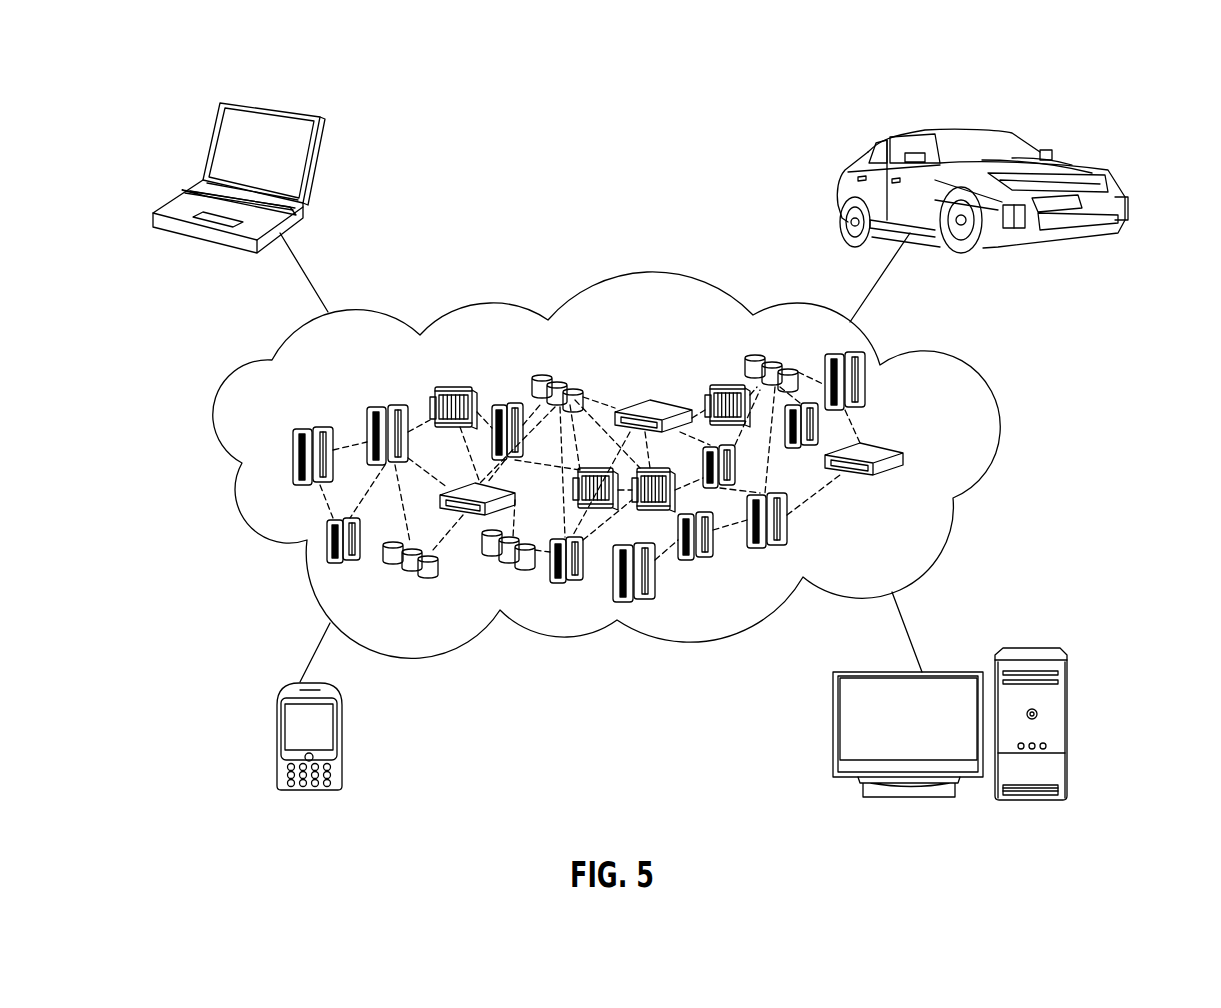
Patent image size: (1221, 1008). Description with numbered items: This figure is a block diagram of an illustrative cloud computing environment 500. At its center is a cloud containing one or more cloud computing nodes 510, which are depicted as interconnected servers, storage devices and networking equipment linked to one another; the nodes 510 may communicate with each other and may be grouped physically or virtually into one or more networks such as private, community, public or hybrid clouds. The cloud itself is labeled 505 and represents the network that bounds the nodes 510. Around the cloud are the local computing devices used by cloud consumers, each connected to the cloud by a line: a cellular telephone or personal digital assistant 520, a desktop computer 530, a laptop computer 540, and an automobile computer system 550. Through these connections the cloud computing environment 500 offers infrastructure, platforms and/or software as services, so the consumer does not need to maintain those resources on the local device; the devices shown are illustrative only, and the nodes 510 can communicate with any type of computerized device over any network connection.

The cloud computing environment 500 is at (618, 81).
The network (cloud) 505 is at (962, 377).
The cloud computing nodes 510 is at (938, 455).
The mobile phone 520 is at (278, 742).
The desktop computer 530 is at (1035, 642).
The laptop computer 540 is at (313, 167).
The vehicle 550 is at (845, 175).